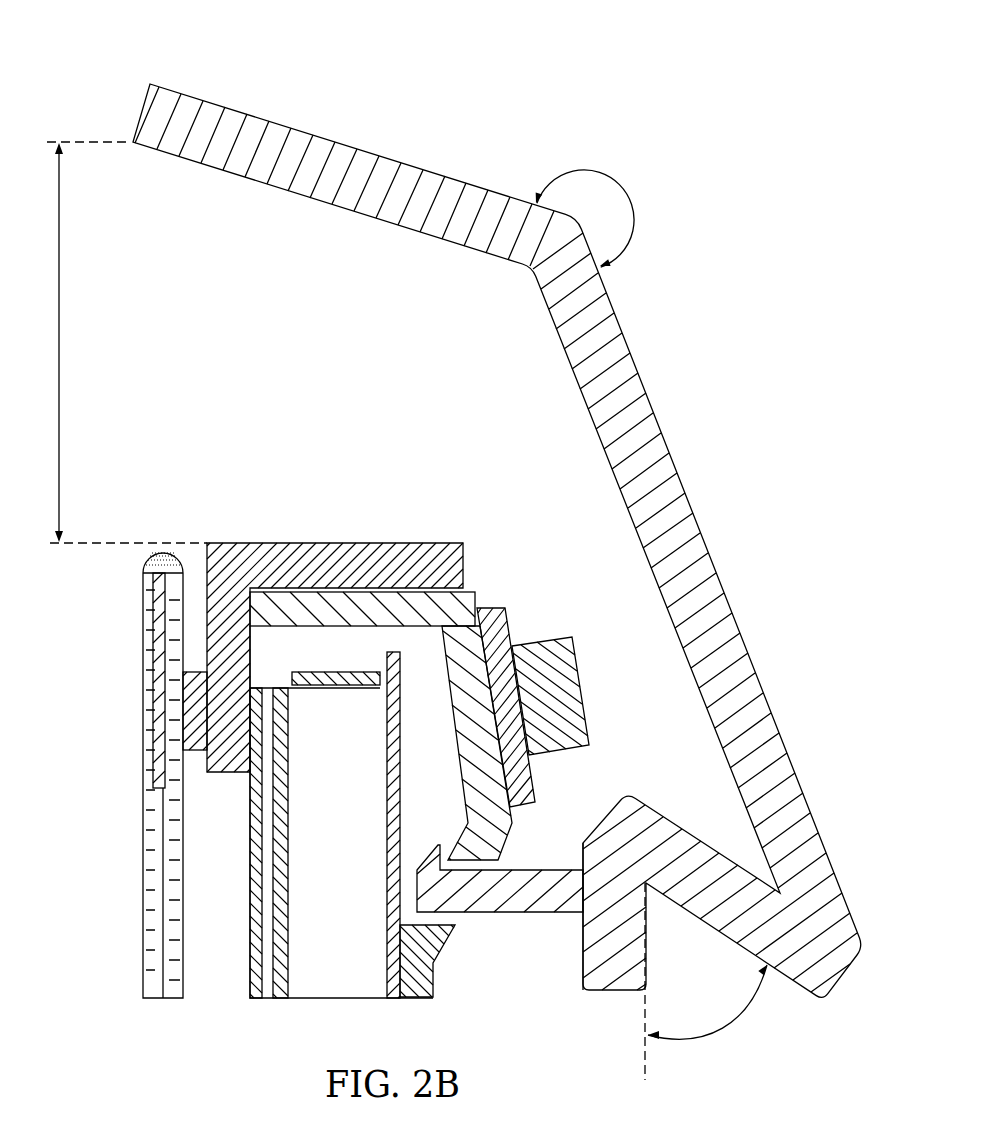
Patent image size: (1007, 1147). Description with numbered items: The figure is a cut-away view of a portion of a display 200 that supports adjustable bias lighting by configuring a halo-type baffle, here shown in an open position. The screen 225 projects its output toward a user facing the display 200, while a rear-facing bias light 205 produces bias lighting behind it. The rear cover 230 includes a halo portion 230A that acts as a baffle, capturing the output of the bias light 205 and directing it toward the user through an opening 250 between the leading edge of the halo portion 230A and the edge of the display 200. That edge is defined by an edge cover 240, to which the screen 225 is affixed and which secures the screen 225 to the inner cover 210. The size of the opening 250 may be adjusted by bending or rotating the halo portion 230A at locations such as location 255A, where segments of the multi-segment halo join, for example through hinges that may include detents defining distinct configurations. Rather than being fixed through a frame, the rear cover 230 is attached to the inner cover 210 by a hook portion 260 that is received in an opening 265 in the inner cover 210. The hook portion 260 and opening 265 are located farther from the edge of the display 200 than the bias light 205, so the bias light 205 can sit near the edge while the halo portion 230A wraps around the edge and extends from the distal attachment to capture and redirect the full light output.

The display 200 is at (116, 43).
The bias light 205 is at (575, 710).
The inner cover 210 is at (456, 699).
The screen 225 is at (136, 714).
The rear cover 230 is at (619, 985).
The halo portion 230A is at (646, 408).
The edge cover 240 is at (360, 570).
The opening 250 is at (62, 344).
The location joining halo segments 255A is at (628, 186).
The hook portion 260 is at (487, 905).
The opening in the inner cover 265 is at (430, 925).